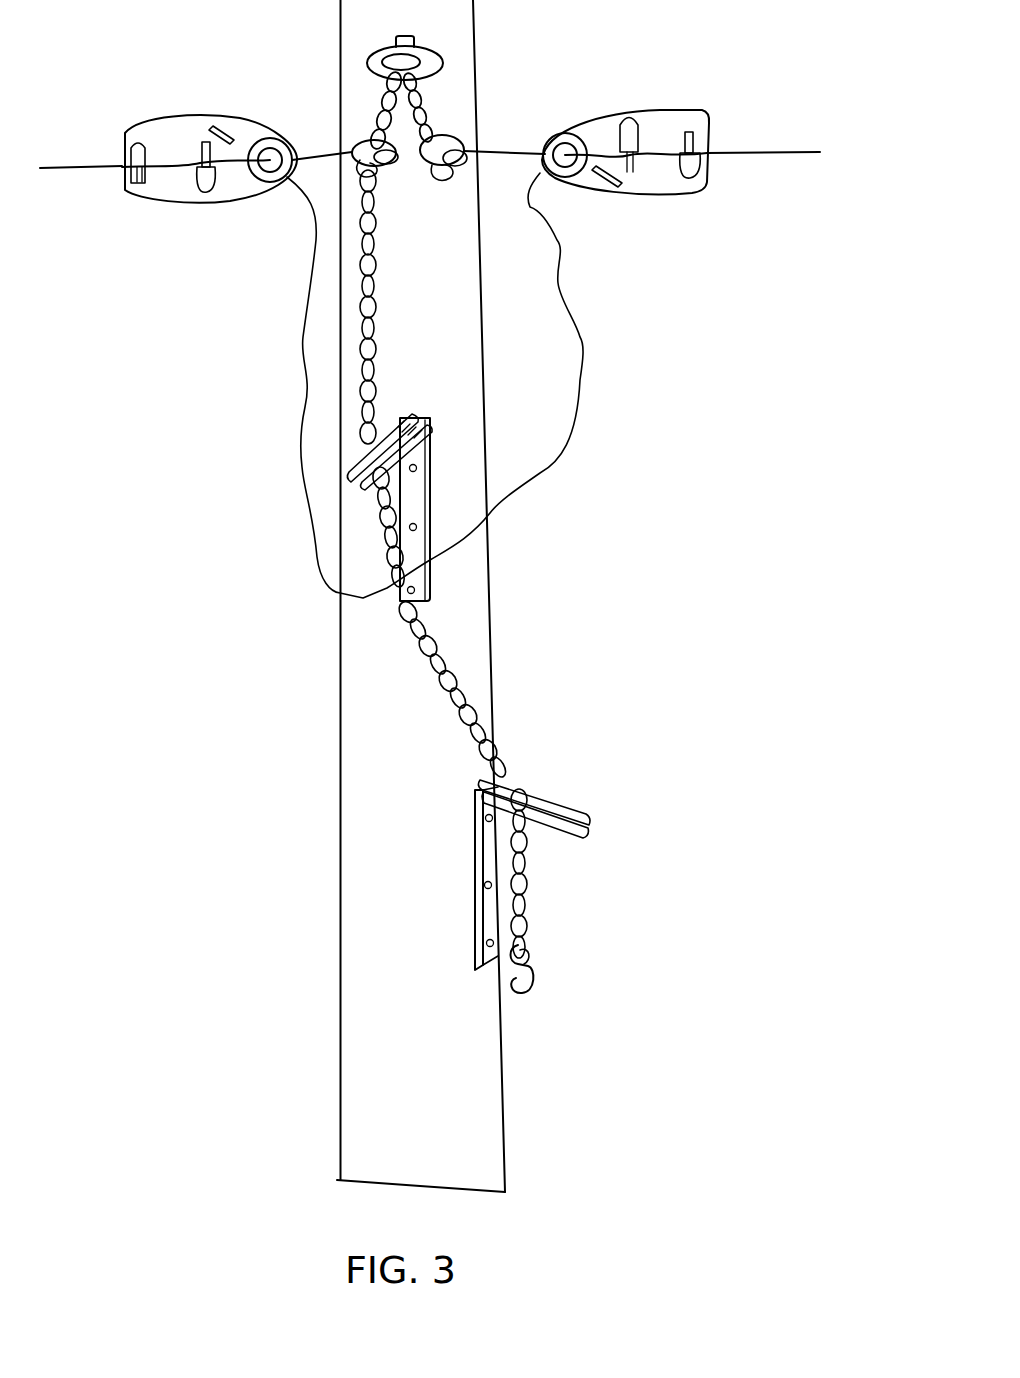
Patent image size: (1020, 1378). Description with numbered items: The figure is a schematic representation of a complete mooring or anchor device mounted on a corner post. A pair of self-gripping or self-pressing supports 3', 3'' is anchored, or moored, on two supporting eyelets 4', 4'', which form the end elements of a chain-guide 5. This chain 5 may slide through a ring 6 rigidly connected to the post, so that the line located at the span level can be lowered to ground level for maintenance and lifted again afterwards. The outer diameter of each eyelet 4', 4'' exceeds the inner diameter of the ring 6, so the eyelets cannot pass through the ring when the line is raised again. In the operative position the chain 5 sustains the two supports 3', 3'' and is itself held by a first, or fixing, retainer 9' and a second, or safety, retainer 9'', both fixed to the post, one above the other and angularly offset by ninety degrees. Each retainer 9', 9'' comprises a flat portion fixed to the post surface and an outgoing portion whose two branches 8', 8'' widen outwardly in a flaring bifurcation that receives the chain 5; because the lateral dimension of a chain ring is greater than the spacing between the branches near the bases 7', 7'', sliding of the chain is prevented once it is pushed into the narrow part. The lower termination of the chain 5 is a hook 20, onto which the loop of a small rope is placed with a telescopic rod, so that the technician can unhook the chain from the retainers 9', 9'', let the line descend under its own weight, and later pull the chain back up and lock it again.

The self-gripping support 3' is at (189, 124).
The self-gripping support 3'' is at (646, 118).
The supporting eyelet 4' is at (340, 201).
The supporting eyelet 4'' is at (482, 200).
The chain-guide 5 is at (335, 628).
The ring 6 is at (440, 57).
The base 7' is at (405, 480).
The base 7'' is at (476, 820).
The branch 8' is at (332, 452).
The branch 8'' is at (582, 787).
The fixing retainer 9' is at (489, 509).
The safety retainer 9'' is at (382, 880).
The hook 20 is at (525, 993).